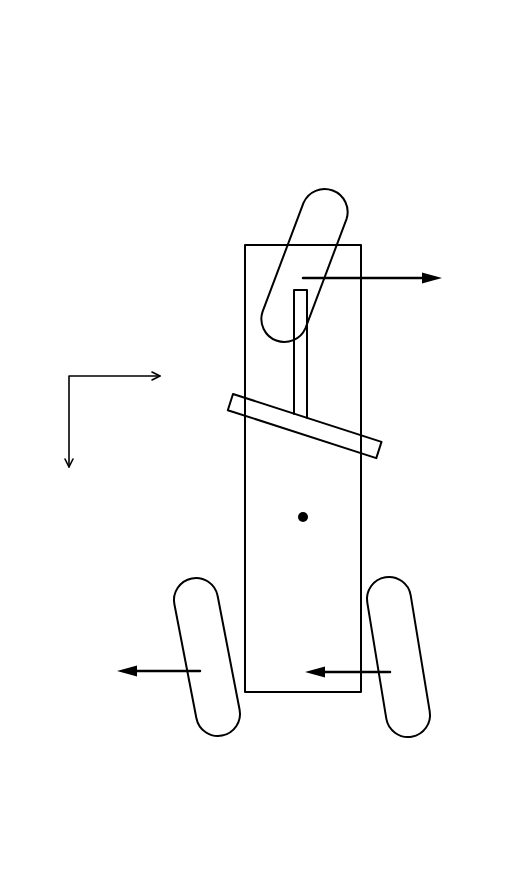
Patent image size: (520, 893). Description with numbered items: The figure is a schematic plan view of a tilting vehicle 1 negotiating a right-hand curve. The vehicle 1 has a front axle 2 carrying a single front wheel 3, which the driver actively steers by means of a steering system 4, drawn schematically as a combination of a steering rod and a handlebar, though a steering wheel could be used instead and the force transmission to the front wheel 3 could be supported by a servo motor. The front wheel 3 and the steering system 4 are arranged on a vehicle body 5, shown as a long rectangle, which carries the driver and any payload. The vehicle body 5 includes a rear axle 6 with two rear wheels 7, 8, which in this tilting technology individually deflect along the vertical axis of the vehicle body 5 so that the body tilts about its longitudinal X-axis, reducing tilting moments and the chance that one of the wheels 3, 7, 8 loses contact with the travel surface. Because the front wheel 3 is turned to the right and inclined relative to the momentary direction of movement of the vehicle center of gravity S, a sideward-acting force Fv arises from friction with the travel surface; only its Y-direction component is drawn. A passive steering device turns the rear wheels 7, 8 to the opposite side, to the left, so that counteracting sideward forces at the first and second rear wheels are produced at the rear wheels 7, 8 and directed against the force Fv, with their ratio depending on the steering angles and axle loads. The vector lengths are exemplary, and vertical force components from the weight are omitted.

The vehicle 1 is at (332, 130).
The front axle 2 is at (357, 226).
The front wheel 3 is at (309, 228).
The steering system 4 is at (253, 362).
The vehicle body 5 is at (361, 348).
The rear axle 6 is at (437, 567).
The rear wheel 7 is at (178, 619).
The rear wheel 8 is at (418, 632).
The vehicle center of gravity S is at (308, 514).